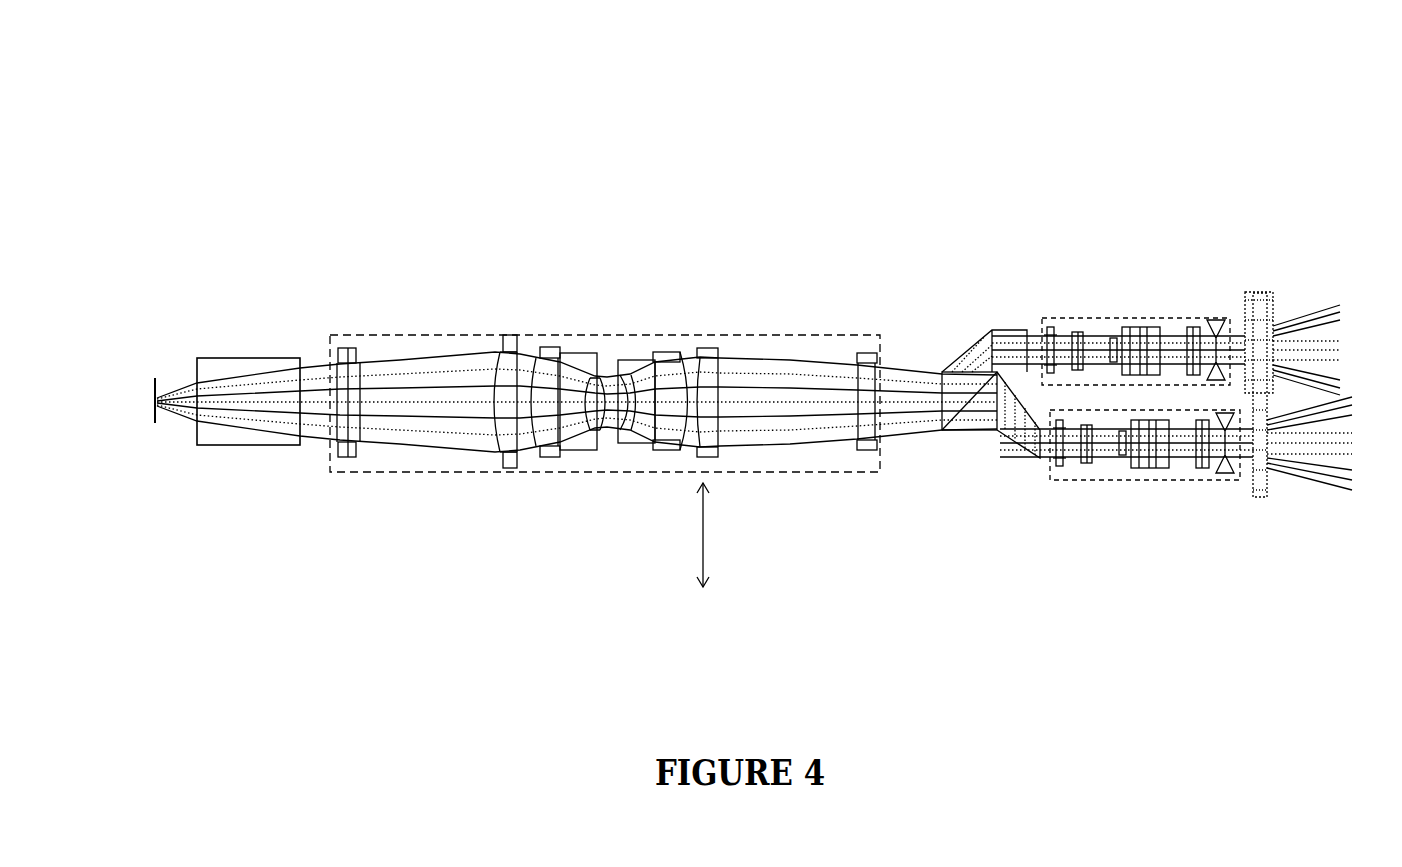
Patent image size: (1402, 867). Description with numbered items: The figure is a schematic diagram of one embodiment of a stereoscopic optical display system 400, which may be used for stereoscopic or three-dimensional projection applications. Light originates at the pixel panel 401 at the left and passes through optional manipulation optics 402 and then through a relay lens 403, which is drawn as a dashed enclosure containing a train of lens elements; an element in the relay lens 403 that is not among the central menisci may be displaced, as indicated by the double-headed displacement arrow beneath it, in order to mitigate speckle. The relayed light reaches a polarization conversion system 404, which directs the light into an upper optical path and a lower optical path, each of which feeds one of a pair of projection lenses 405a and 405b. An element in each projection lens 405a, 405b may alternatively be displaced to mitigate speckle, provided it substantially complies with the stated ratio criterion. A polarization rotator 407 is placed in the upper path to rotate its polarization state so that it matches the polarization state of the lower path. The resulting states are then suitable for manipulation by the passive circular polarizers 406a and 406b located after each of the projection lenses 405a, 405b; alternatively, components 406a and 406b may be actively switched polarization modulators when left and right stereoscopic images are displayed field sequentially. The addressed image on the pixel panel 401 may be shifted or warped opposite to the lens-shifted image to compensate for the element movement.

The stereoscopic optical display system 400 is at (1042, 132).
The pixel panel 401 is at (146, 403).
The manipulation optics 402 is at (290, 367).
The relay lens 403 is at (641, 340).
The polarization conversion system 404 is at (933, 350).
The projection lens 405a is at (1062, 320).
The projection lens 405b is at (1092, 472).
The passive circular polarizer 406a is at (1324, 321).
The passive circular polarizer 406b is at (1294, 474).
The polarization rotator 407 is at (1250, 297).